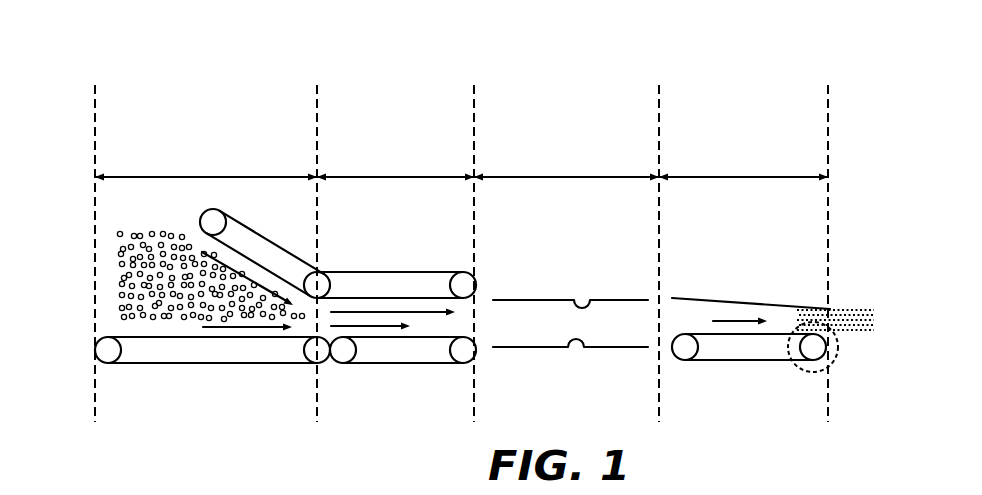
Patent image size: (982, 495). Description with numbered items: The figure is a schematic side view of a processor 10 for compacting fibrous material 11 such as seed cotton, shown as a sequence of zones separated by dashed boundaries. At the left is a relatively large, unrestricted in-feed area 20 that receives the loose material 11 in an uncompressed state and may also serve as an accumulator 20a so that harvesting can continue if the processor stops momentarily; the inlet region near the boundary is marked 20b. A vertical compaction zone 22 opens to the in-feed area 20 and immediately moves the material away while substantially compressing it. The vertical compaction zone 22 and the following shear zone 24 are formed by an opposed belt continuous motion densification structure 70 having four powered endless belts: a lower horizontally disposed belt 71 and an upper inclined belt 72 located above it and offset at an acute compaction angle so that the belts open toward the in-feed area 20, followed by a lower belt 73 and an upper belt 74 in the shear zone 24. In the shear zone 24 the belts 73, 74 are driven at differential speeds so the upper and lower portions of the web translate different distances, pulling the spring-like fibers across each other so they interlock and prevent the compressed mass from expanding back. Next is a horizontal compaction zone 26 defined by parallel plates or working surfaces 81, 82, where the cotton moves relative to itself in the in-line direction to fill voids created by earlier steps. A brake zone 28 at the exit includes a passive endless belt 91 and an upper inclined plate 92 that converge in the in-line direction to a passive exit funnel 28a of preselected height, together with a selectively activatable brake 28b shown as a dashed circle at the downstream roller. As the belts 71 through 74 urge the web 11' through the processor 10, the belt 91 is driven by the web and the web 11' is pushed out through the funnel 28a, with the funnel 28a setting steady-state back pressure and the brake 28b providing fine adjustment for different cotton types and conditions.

The processor 10 is at (642, 48).
The fibrous material 11 is at (163, 321).
The web of material 11' is at (835, 349).
The in-feed area 20 is at (104, 276).
The accumulator 20a is at (117, 228).
The inlet end of apparatus 20b is at (115, 98).
The vertical compaction zone 22 is at (180, 229).
The shear zone 24 is at (380, 254).
The horizontal compaction zone 26 is at (526, 277).
The brake zone 28 is at (768, 274).
The passive exit funnel 28a is at (830, 312).
The brake 28b is at (812, 372).
The opposed belt continuous motion densification structure 70 is at (297, 438).
The lower horizontally disposed belt 71 is at (228, 368).
The upper inclined belt 72 is at (228, 214).
The lower shear belt 73 is at (437, 364).
The upper shear belt 74 is at (415, 272).
The lower plate 81 is at (588, 347).
The upper plate 82 is at (575, 300).
The passive endless belt 91 is at (680, 333).
The upper inclined plate 92 is at (714, 298).